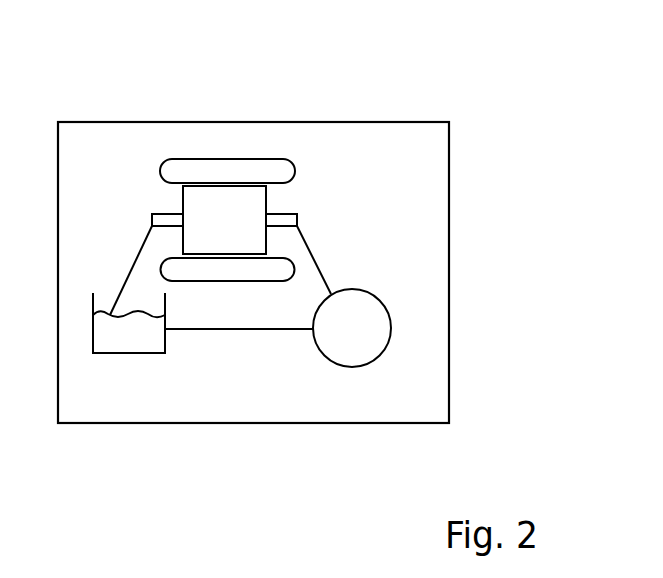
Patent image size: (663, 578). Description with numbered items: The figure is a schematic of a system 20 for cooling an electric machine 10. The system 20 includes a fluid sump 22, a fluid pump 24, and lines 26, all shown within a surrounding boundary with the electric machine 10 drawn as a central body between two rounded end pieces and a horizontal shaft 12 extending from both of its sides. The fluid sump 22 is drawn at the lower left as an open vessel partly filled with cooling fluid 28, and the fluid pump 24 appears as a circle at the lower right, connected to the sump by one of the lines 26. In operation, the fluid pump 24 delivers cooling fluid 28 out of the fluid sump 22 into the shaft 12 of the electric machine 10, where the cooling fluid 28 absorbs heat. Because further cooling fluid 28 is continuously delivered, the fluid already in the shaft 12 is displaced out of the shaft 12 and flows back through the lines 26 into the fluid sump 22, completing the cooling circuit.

The electric machine 10 is at (288, 150).
The shaft 12 is at (168, 214).
The system 20 is at (253, 122).
The fluid sump 22 is at (135, 353).
The fluid pump 24 is at (329, 362).
The lines 26 is at (265, 329).
The cooling fluid 28 is at (103, 338).